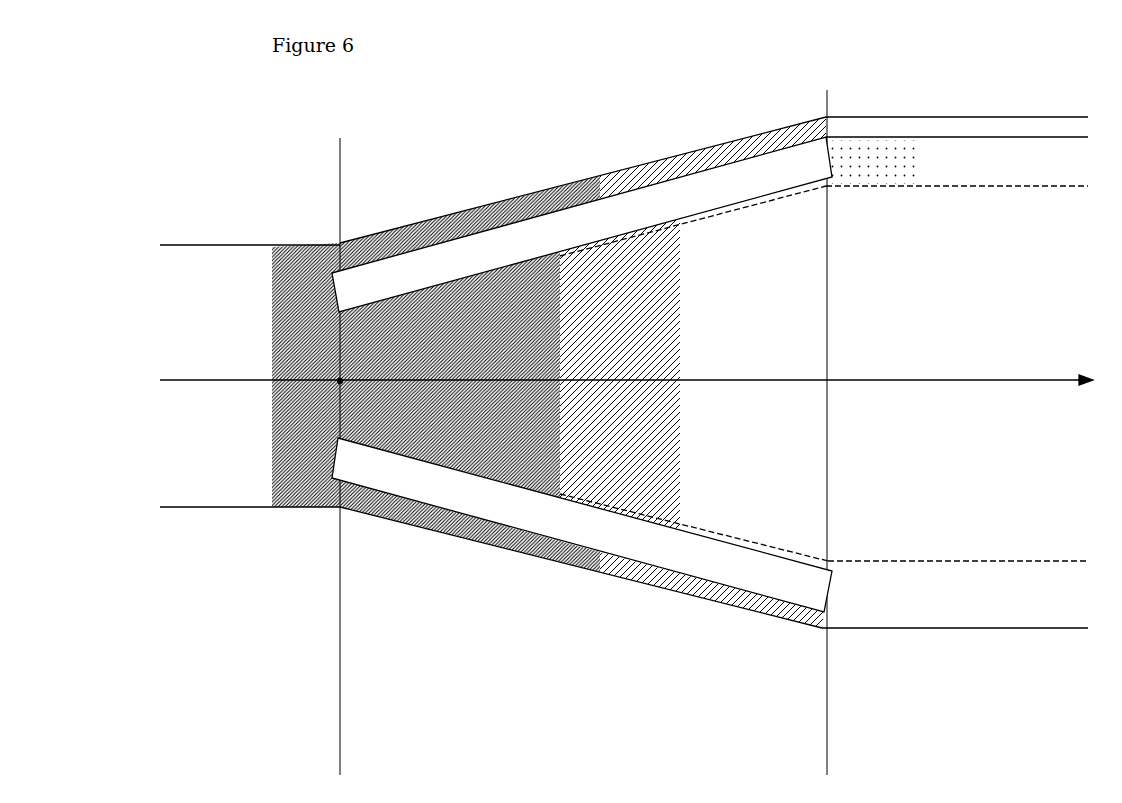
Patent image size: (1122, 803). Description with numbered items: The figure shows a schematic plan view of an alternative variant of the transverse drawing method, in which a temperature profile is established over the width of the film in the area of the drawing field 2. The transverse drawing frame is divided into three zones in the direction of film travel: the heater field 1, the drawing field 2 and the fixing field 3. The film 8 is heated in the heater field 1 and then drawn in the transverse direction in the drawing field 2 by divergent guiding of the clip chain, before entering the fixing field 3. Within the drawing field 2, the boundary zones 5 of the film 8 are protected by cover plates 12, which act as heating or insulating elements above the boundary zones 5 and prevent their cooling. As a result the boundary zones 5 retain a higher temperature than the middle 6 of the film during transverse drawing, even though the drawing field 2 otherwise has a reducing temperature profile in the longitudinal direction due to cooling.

The heater field 1 is at (250, 468).
The drawing field 2 is at (583, 432).
The fixing field 3 is at (955, 403).
The boundary zones 5 is at (888, 682).
The middle of the film 6 is at (676, 377).
The film 8 is at (306, 338).
The cover plates 12 is at (667, 630).